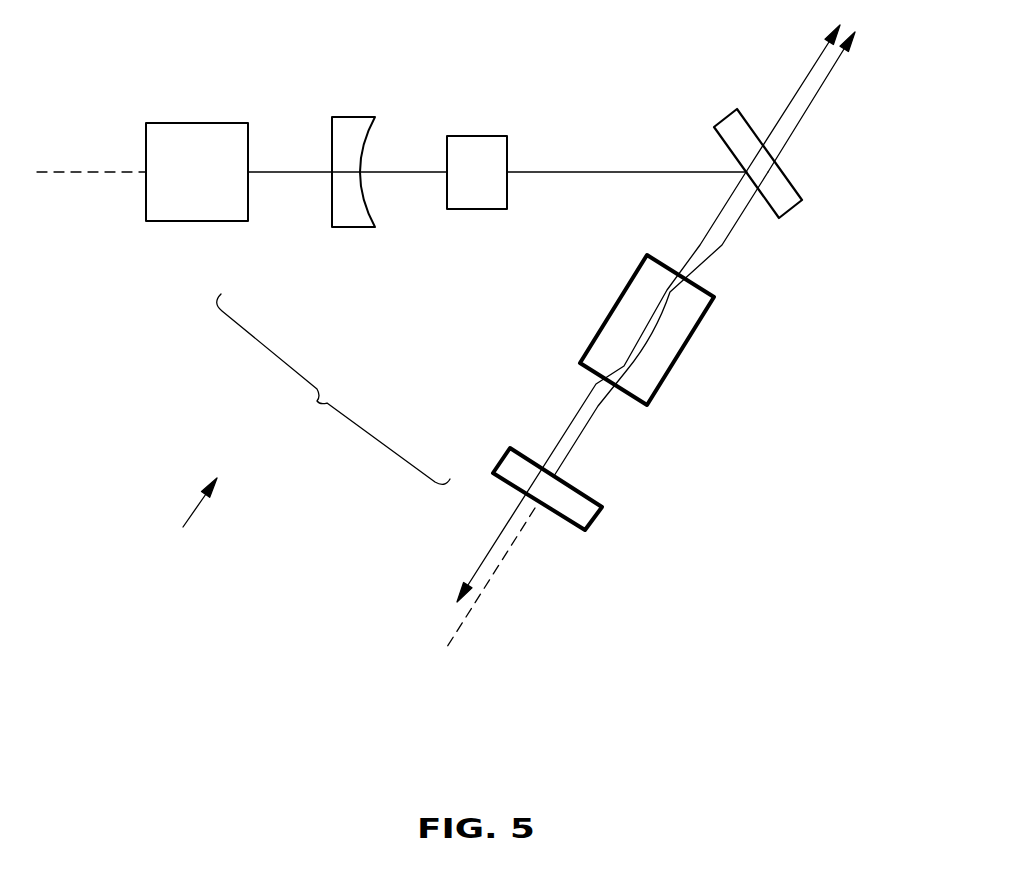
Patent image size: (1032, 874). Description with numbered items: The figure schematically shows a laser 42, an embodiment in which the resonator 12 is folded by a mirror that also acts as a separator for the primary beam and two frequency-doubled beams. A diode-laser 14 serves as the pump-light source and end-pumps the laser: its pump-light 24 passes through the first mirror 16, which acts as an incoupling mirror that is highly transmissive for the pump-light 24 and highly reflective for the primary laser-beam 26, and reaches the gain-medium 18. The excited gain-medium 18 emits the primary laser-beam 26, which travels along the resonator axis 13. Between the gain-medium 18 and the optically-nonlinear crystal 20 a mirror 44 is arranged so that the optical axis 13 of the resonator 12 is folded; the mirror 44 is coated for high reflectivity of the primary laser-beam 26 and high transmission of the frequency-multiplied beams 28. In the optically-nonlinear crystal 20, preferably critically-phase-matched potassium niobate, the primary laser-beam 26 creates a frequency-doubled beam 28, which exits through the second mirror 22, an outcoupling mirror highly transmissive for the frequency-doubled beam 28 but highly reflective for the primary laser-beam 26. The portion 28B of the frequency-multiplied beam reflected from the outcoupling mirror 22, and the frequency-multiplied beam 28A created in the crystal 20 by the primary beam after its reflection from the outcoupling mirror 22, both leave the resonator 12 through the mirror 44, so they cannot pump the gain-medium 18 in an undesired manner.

The resonator 12 is at (347, 417).
The resonator axis 13 is at (82, 172).
The diode-laser 14 is at (196, 123).
The first mirror 16 is at (345, 117).
The gain-medium 18 is at (480, 136).
The optically-nonlinear crystal 20 is at (683, 353).
The second mirror 22 is at (600, 515).
The pump-light 24 is at (268, 172).
The primary laser-beam 26 is at (605, 172).
The frequency-doubled beam 28 is at (505, 528).
The frequency-multiplied beam 28A is at (805, 110).
The portion of frequency-multiplied beam 28B is at (797, 88).
The laser 42 is at (178, 510).
The mirror 44 is at (727, 115).